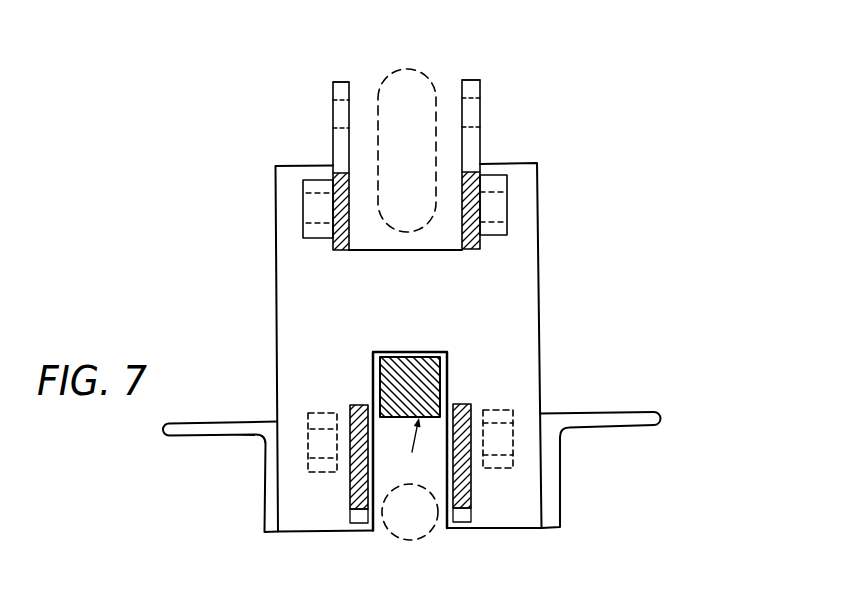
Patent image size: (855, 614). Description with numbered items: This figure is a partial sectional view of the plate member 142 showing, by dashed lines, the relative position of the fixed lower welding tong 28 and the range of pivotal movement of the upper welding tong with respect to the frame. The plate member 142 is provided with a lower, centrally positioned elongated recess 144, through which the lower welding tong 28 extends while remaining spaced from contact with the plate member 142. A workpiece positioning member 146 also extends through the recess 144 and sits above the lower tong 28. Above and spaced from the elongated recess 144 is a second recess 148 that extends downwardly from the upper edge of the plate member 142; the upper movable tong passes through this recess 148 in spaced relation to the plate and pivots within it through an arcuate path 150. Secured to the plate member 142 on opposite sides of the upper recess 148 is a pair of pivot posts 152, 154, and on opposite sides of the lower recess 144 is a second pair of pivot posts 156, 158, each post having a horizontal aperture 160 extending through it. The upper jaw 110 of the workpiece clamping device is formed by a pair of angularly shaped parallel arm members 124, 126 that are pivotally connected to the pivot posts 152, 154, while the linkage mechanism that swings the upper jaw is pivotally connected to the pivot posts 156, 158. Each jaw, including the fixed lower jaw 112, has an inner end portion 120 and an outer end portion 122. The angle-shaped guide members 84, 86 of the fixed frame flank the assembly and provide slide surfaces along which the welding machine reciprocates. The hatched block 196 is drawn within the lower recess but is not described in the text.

The lower welding tong 28 is at (437, 528).
The guide member 84 is at (254, 438).
The guide member 86 is at (560, 438).
The upper jaw 110 is at (333, 109).
The lower jaw 112 is at (352, 492).
The inner end portion 120 is at (336, 81).
The outer end portion 122 is at (342, 244).
The arm member 124 is at (333, 147).
The arm member 126 is at (480, 147).
The plate member 142 is at (538, 297).
The elongated recess 144 is at (425, 352).
The workpiece positioning member 146 is at (412, 449).
The second recess 148 is at (403, 250).
The arcuate path 150 is at (380, 75).
The pivot post 152 is at (303, 189).
The pivot post 154 is at (507, 176).
The pivot post 156 is at (308, 414).
The pivot post 158 is at (513, 410).
The horizontal aperture 160 is at (322, 193).
The core block 196 is at (438, 367).